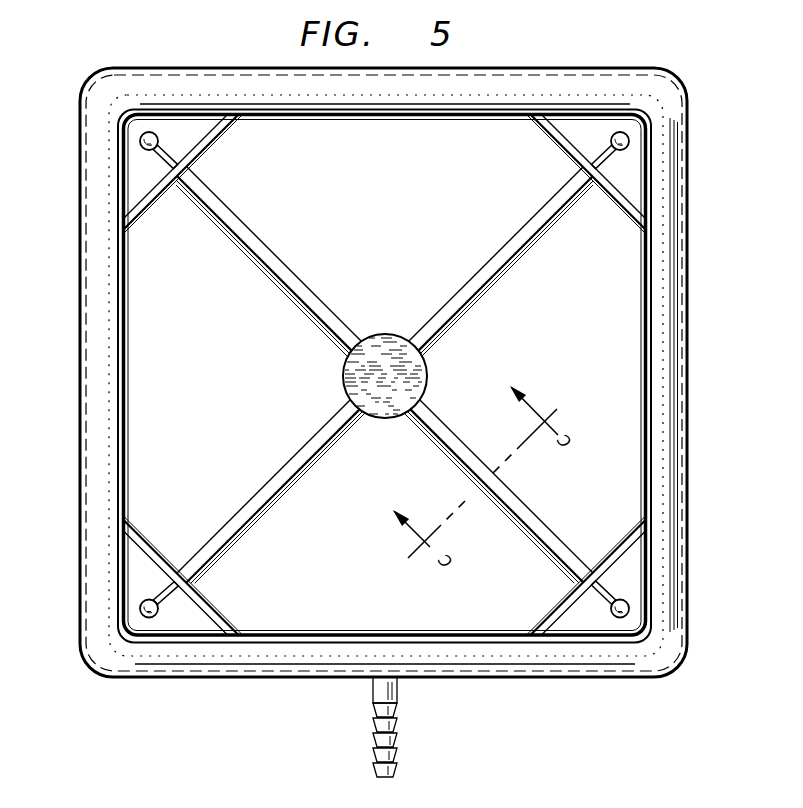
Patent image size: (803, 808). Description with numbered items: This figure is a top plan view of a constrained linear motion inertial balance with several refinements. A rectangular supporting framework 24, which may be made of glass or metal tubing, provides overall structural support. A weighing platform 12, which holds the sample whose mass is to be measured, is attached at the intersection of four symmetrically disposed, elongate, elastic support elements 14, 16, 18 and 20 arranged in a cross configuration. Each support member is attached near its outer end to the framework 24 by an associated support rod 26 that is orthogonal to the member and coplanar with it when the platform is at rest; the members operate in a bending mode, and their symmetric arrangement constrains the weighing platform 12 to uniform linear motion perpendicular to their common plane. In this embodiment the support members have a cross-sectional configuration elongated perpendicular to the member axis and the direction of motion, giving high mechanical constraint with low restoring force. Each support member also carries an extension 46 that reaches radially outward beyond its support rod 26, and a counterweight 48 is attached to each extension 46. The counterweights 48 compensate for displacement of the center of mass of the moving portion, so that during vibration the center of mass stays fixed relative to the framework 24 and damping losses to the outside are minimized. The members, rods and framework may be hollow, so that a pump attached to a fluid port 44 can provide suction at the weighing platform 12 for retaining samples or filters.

The weighing platform 12 is at (427, 371).
The elongate elastic support element 14 is at (447, 449).
The elongate elastic support element 16 is at (323, 427).
The elongate elastic support element 18 is at (302, 272).
The elongate elastic support element 20 is at (482, 266).
The supporting framework 24 is at (684, 382).
The support rod 26 is at (210, 150).
The fluid port 44 is at (395, 742).
The extension 46 is at (172, 170).
The counterweight 48 is at (149, 131).